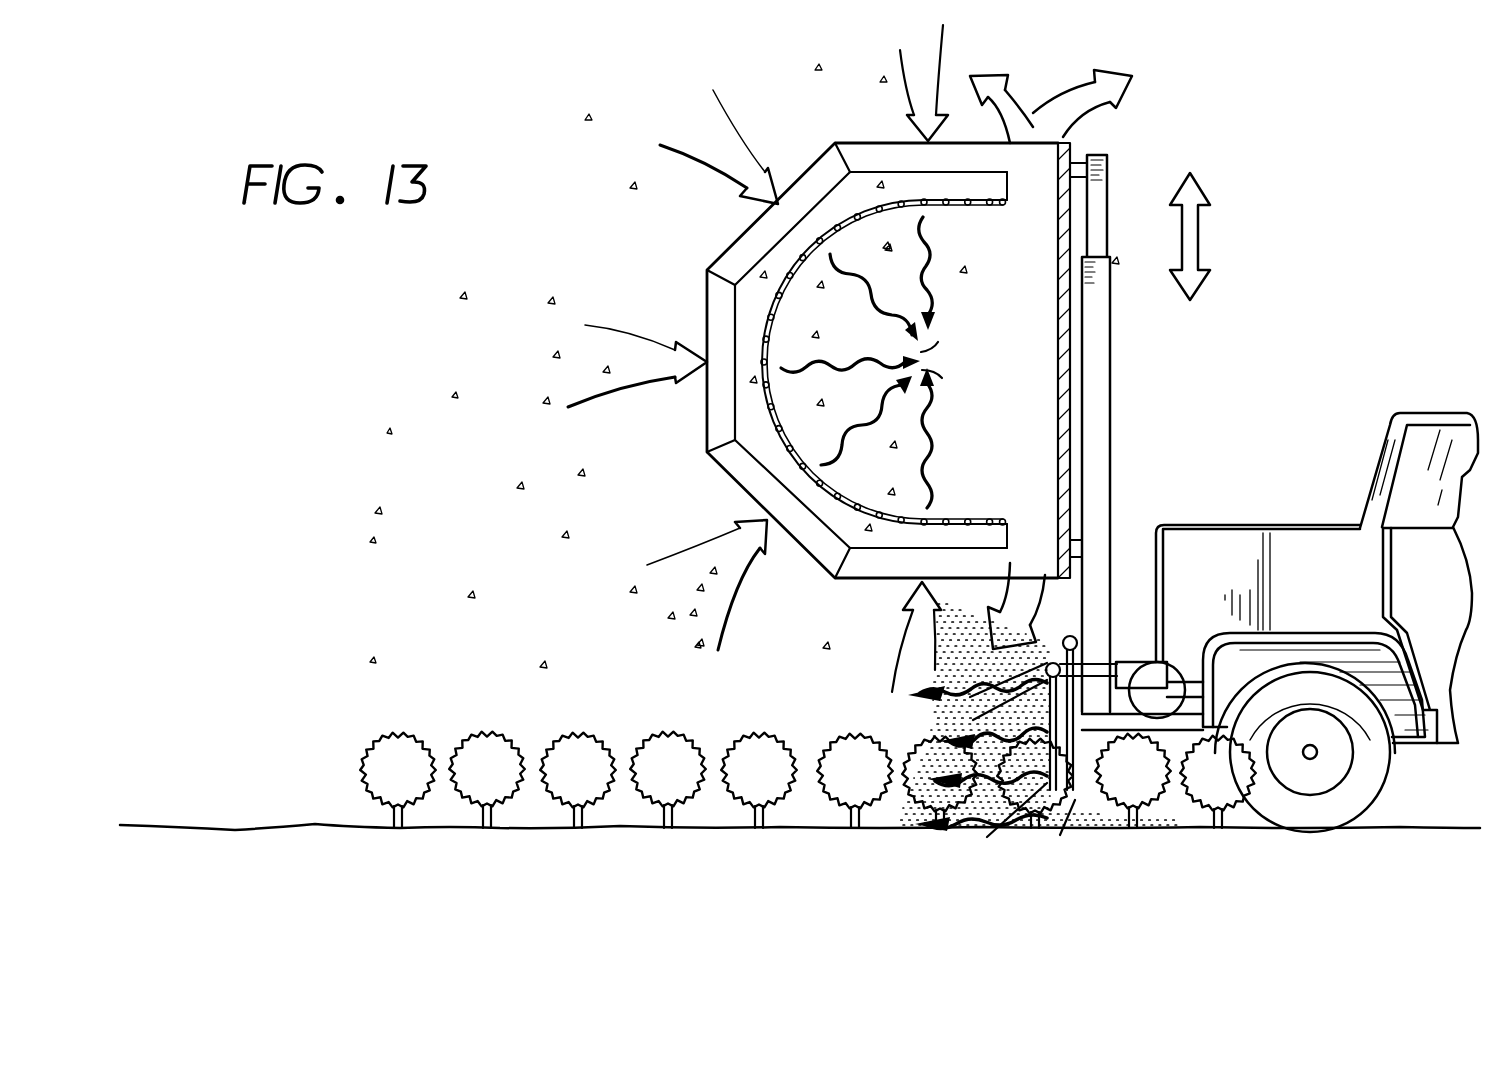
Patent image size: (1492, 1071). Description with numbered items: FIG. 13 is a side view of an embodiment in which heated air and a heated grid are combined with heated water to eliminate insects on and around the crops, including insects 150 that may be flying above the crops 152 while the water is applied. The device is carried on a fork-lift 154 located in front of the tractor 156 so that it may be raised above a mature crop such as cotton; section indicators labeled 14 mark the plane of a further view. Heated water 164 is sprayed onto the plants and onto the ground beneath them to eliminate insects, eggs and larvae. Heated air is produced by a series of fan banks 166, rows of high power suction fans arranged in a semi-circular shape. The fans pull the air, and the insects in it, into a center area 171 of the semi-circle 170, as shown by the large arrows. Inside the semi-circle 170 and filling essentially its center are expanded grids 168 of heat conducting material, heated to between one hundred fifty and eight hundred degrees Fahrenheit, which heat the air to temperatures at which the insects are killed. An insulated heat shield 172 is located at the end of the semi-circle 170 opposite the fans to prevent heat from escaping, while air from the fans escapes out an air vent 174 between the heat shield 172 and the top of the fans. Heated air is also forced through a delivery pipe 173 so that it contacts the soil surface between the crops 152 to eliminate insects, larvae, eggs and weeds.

The section line 14- 14 is at (537, 250).
The insects 150 is at (630, 187).
The crops 152 is at (613, 750).
The fork-lift 154 is at (1097, 425).
The tractor 156 is at (1287, 532).
The heated water 164 is at (970, 690).
The fan banks 166 is at (757, 227).
The grids 168 is at (845, 208).
The semi-circle 170 is at (938, 381).
The center area 171 is at (941, 334).
The insulated heat shield 172 is at (1054, 356).
The delivery pipe 173 is at (1072, 787).
The air vent 174 is at (1025, 567).